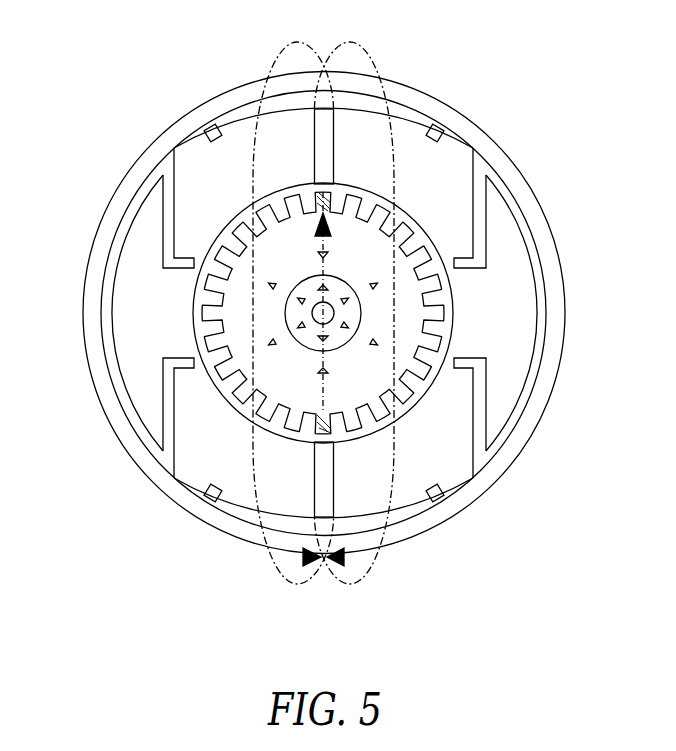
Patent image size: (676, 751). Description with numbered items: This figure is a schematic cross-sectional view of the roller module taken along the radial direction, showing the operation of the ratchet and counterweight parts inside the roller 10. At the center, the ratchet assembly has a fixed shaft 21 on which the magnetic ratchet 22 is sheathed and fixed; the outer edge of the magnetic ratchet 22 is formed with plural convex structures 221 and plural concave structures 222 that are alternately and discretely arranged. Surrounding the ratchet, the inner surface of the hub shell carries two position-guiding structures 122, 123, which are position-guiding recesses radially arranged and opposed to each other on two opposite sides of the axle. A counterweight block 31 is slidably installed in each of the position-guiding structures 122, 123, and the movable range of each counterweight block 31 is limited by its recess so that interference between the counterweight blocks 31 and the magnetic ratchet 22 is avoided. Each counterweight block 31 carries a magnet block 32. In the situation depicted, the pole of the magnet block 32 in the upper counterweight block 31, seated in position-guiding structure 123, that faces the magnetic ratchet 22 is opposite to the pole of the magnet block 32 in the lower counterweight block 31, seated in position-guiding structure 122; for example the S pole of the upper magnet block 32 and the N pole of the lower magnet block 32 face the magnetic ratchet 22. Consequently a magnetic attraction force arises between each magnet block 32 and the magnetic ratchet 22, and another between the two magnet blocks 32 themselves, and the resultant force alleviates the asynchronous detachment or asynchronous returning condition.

The roller 10 is at (138, 161).
The position-guiding structure 122 is at (417, 505).
The position-guiding structure 123 is at (190, 150).
The fixed shaft 21 is at (300, 313).
The magnetic ratchet 22 is at (438, 305).
The convex structure 221 is at (435, 250).
The concave structure 222 is at (220, 298).
The counterweight block 31 is at (403, 135).
The magnet block 32 is at (313, 135).